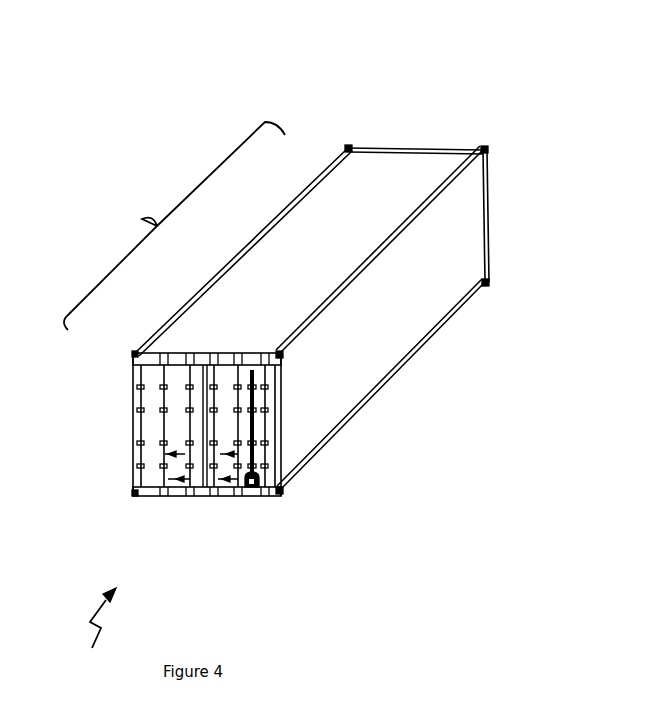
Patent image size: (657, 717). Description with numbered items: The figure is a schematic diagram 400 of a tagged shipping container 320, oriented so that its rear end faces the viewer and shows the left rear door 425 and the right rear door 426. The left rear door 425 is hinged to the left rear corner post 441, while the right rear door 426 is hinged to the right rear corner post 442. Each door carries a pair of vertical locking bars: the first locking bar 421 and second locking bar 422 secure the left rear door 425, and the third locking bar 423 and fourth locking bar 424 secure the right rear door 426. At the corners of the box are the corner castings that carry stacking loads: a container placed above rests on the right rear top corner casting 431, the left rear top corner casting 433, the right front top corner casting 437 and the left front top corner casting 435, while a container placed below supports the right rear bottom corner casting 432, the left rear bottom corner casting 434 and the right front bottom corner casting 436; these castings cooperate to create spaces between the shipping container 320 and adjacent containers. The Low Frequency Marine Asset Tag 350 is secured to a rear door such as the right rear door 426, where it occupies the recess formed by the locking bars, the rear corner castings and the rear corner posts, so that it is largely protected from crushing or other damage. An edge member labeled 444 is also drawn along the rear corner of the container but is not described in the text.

The shipping container 320 is at (274, 305).
The Low Frequency Marine Asset Tag 350 is at (262, 498).
The schematic diagram 400 is at (92, 634).
The first locking bar 421 is at (162, 497).
The second locking bar 422 is at (187, 497).
The third locking bar 423 is at (213, 498).
The fourth locking bar 424 is at (238, 497).
The left rear door 425 is at (152, 478).
The right rear door 426 is at (225, 428).
The right rear top corner casting 431 is at (283, 352).
The right rear bottom corner casting 432 is at (283, 491).
The left rear top corner casting 433 is at (130, 368).
The left rear bottom corner casting 434 is at (135, 491).
The left front top corner casting 435 is at (487, 150).
The right front bottom corner casting 436 is at (488, 284).
The right front top corner casting 437 is at (350, 148).
The left rear corner post 441 is at (133, 414).
The right rear corner post 442 is at (282, 400).
The rear corner post 444 is at (489, 218).